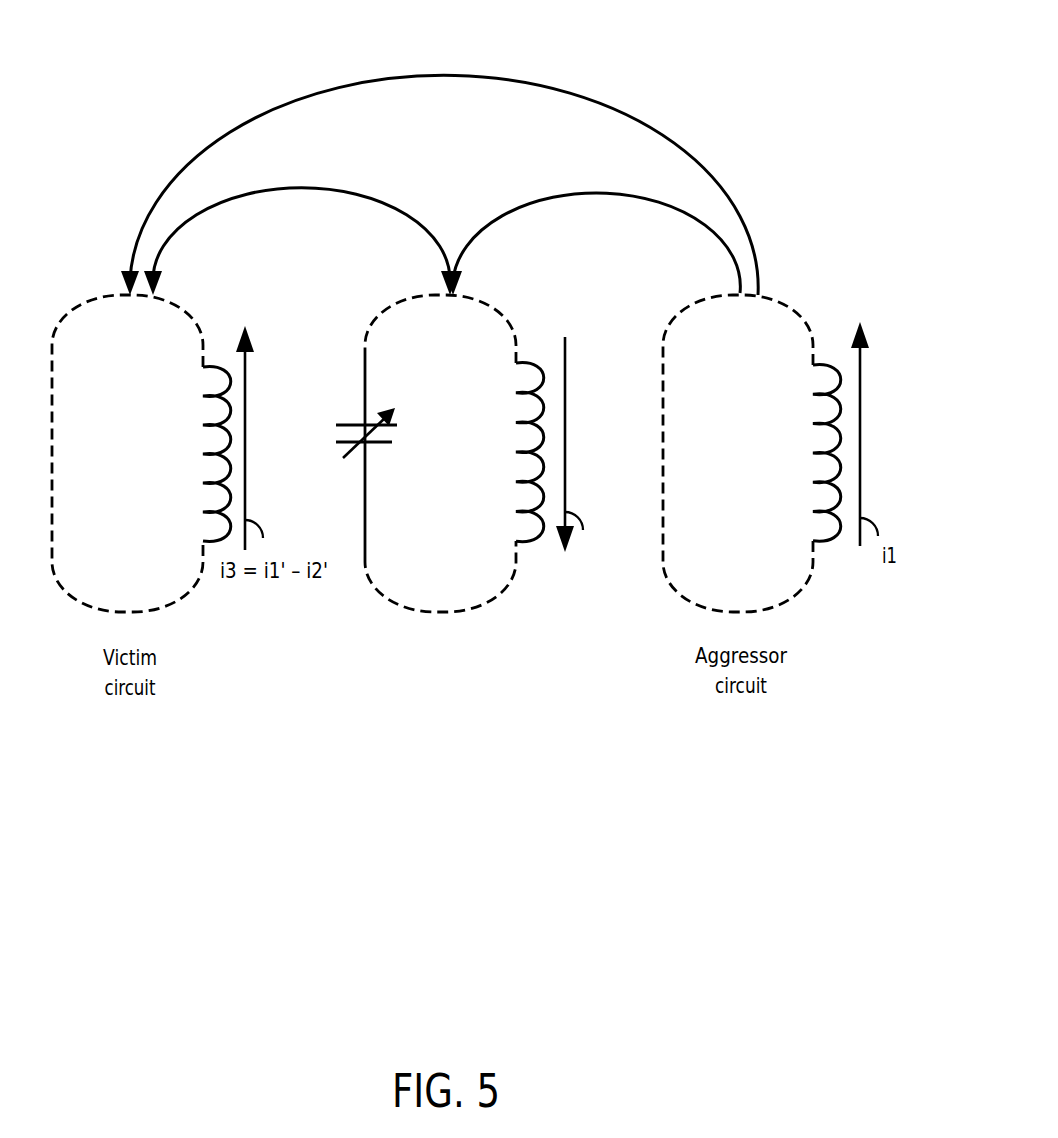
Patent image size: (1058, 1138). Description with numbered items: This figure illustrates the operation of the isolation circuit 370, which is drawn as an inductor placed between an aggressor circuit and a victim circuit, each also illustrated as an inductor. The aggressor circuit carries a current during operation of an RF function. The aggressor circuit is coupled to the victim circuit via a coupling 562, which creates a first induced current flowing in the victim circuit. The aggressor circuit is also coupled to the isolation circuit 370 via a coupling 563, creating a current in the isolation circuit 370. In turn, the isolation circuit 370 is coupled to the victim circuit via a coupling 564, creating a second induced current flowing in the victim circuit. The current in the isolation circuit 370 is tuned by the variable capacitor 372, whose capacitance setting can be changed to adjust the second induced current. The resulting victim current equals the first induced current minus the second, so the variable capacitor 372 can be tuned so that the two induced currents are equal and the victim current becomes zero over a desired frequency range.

The isolation circuit 370 is at (455, 497).
The variable capacitor 372 is at (338, 425).
The coupling 562 is at (425, 68).
The coupling 563 is at (615, 187).
The coupling 564 is at (318, 188).